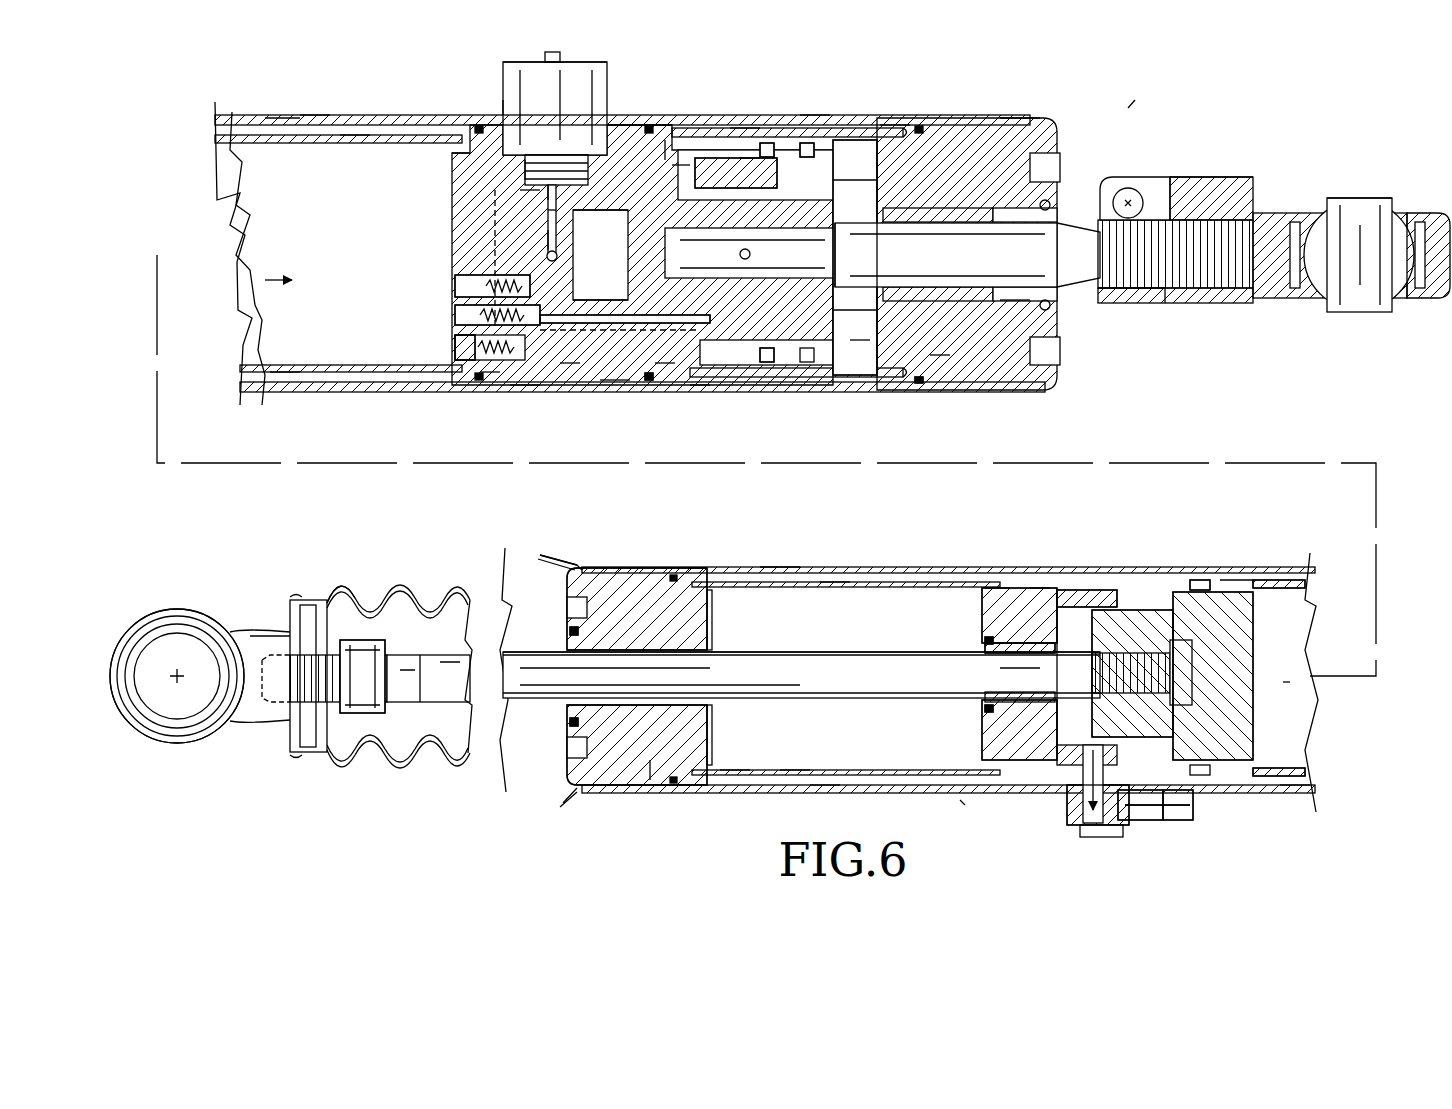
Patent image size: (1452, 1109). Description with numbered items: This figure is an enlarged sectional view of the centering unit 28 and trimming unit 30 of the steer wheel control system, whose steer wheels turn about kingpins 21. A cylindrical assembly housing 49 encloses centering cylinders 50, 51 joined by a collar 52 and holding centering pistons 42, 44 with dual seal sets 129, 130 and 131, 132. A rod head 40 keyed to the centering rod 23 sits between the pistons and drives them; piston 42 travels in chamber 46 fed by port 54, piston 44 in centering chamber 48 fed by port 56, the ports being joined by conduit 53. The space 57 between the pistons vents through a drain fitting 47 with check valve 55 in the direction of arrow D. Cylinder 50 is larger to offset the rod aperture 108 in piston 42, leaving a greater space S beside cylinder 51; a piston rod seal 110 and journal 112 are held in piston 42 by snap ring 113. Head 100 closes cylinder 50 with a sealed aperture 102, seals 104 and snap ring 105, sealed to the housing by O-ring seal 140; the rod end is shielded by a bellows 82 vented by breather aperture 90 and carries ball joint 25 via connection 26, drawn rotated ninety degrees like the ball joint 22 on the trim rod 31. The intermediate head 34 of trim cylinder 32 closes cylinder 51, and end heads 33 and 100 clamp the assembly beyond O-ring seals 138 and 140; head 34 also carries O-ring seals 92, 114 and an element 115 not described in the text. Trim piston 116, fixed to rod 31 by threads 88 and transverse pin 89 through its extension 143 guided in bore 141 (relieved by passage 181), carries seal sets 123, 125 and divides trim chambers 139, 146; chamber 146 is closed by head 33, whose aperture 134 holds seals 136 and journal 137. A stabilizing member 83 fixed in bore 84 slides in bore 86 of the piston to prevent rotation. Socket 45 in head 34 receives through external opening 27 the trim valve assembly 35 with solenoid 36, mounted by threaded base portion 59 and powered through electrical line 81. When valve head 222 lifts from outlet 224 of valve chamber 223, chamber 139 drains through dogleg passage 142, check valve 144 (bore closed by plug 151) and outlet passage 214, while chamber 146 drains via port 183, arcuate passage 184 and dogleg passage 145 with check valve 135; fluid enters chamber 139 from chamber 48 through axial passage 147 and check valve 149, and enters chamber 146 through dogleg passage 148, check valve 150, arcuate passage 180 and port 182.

The kingpin 21 is at (1183, 177).
The ball joint 22 is at (1320, 205).
The centering rod 23 is at (453, 663).
The ball joint 25 is at (180, 610).
The connection 26 is at (362, 640).
The external opening 27 is at (615, 125).
The centering unit 28 is at (958, 812).
The trimming unit 30 is at (1128, 108).
The trim rod 31 is at (1075, 288).
The trim cylinder 32 is at (845, 358).
The end head 33 is at (1055, 120).
The intermediate head 34 is at (528, 393).
The trim valve assembly 35 is at (540, 140).
The solenoid 36 is at (512, 75).
The rod head 40 is at (1157, 608).
The centering piston 42 is at (983, 596).
The centering piston 44 is at (1253, 607).
The socket 45 is at (503, 108).
The chamber 46 is at (790, 760).
The drain fitting 47 is at (1063, 808).
The centering chamber 48 is at (260, 280).
The assembly housing 49 is at (310, 115).
The centering cylinder 50 is at (833, 587).
The centering cylinder 51 is at (350, 137).
The collar 52 is at (1100, 582).
The conduit 53 is at (265, 128).
The port 54 is at (712, 592).
The check valve 55 is at (1148, 810).
The port 56 is at (462, 143).
The space 57 is at (1073, 627).
The threaded base portion 59 is at (528, 165).
The electrical line 81 is at (1193, 807).
The flexible bellows 82 is at (393, 773).
The stabilizing member 83 is at (738, 128).
The bore 84 is at (736, 172).
The bore 86 is at (840, 178).
The threads 88 is at (803, 278).
The transverse pin 89 is at (752, 255).
The breather aperture 90 is at (552, 807).
The O-ring seal 92 is at (612, 380).
The head 100 is at (712, 730).
The aperture 102 is at (712, 647).
The seals 104 is at (570, 710).
The snap ring 105 is at (570, 630).
The sealed aperture 108 is at (995, 708).
The piston rod seal 110 is at (1010, 700).
The journal 112 is at (1028, 652).
The snap ring 113 is at (990, 638).
The O-ring seal 114 is at (487, 372).
The seal 115 is at (662, 363).
The trim piston 116 is at (853, 323).
The seal set 123 is at (770, 148).
The seal set 125 is at (828, 148).
The seal set 129 is at (1037, 580).
The seal set 130 is at (1003, 580).
The seal set 131 is at (1200, 580).
The seal set 132 is at (1230, 578).
The aperture 134 is at (1058, 300).
The check valve 135 is at (673, 140).
The seals 136 is at (1055, 205).
The journal 137 is at (1010, 300).
The O-ring seal 138 is at (935, 360).
The trim chamber 139 is at (717, 360).
The O-ring seal 140 is at (660, 767).
The bore 141 is at (584, 278).
The dogleg passage 142 is at (560, 363).
The inward extension 143 is at (745, 165).
The check valve 144 is at (455, 343).
The dogleg passage 145 is at (673, 175).
The trim chamber 146 is at (860, 348).
The axial passage 147 is at (707, 308).
The dogleg passage 148 is at (650, 373).
The check valve 149 is at (470, 318).
The check valve 150 is at (455, 285).
The plug 151 is at (452, 350).
The arcuate housing passage 180 is at (697, 385).
The passage 181 is at (617, 215).
The port 182 is at (890, 365).
The port 183 is at (888, 125).
The arcuate housing passage 184 is at (810, 125).
The outlet passage 214 is at (550, 235).
The valve head 222 is at (555, 187).
The solenoid valve chamber 223 is at (520, 193).
The outlet 224 is at (552, 212).
The space S is at (283, 392).
The arrow D is at (1163, 805).